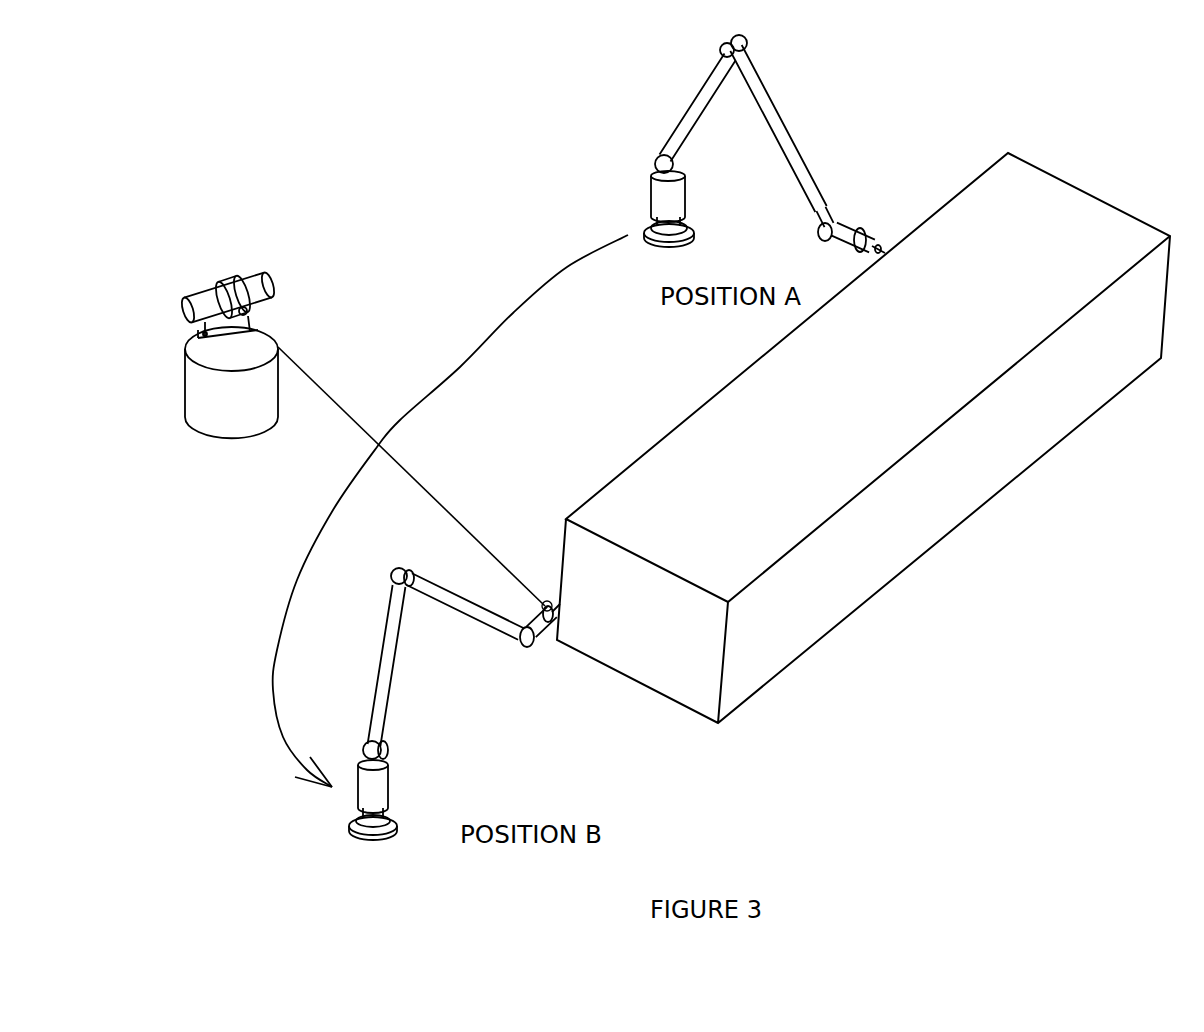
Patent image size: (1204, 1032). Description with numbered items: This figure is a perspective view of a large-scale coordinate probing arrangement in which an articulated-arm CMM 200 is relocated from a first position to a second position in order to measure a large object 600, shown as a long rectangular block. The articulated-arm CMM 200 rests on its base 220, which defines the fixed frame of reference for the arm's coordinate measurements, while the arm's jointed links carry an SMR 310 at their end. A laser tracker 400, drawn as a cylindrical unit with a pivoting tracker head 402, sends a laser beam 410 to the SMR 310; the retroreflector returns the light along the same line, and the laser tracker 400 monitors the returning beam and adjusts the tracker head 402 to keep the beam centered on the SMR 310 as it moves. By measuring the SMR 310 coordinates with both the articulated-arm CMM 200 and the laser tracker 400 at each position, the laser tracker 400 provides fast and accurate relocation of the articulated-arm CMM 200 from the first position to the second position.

The articulated-arm CMM 200 is at (735, 214).
The base 220 is at (651, 247).
The SMR 310 is at (548, 601).
The laser tracker 400 is at (272, 244).
The tracker head 402 is at (222, 272).
The laser beam 410 is at (308, 373).
The large object 600 is at (742, 373).